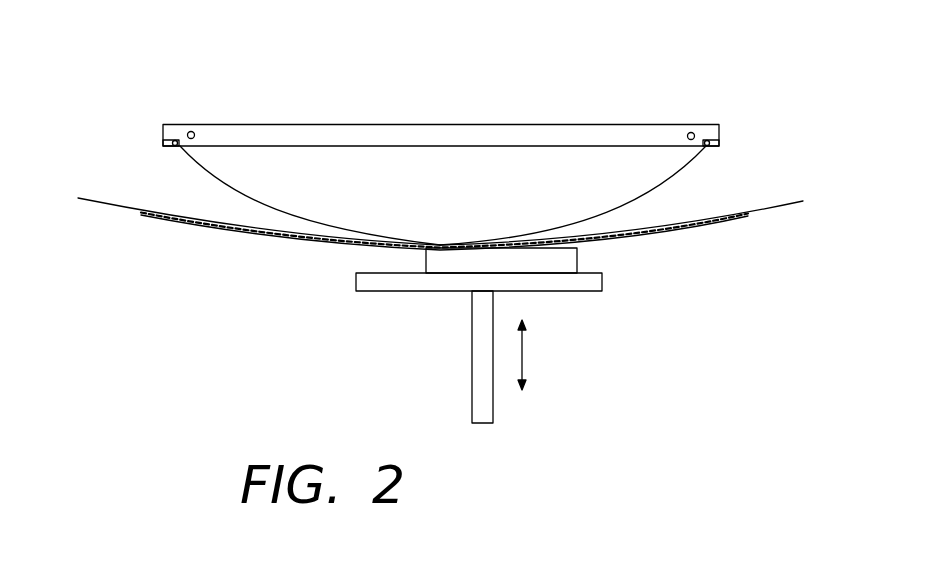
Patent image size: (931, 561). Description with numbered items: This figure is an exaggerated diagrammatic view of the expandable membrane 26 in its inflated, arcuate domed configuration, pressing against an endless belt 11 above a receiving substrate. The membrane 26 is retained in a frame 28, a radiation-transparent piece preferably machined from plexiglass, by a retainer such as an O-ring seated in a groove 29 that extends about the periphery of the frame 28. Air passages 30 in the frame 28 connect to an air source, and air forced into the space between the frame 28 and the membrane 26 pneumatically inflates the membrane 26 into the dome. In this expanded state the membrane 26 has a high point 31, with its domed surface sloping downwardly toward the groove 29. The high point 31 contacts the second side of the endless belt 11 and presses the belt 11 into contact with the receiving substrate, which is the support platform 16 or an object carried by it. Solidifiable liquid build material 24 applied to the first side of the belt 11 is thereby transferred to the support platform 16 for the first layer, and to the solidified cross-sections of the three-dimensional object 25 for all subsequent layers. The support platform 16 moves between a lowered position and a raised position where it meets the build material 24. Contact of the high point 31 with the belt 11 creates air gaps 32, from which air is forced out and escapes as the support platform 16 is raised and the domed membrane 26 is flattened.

The endless belt 11 is at (122, 205).
The support platform 16 is at (405, 291).
The solidifiable liquid build material 24 is at (717, 218).
The three-dimensional object 25 is at (577, 258).
The expandable membrane 26 is at (650, 192).
The frame 28 is at (622, 124).
The groove 29 is at (170, 139).
The air passages 30 is at (191, 131).
The high point 31 is at (442, 243).
The air gaps 32 is at (580, 244).